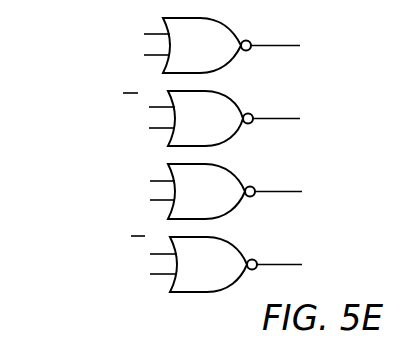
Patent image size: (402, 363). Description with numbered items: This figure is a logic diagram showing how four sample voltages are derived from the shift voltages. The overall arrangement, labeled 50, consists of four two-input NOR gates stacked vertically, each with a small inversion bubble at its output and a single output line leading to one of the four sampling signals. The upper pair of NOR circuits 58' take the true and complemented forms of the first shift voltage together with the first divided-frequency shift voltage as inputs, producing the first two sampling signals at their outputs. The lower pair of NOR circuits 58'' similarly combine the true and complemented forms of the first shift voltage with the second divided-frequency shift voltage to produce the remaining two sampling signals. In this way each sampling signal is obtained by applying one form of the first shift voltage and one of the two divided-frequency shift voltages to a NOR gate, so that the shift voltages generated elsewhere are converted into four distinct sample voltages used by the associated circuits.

The phase signal generating circuit 50 is at (55, 162).
The NOR circuits 58' is at (224, 82).
The NOR circuits 58'' is at (229, 228).